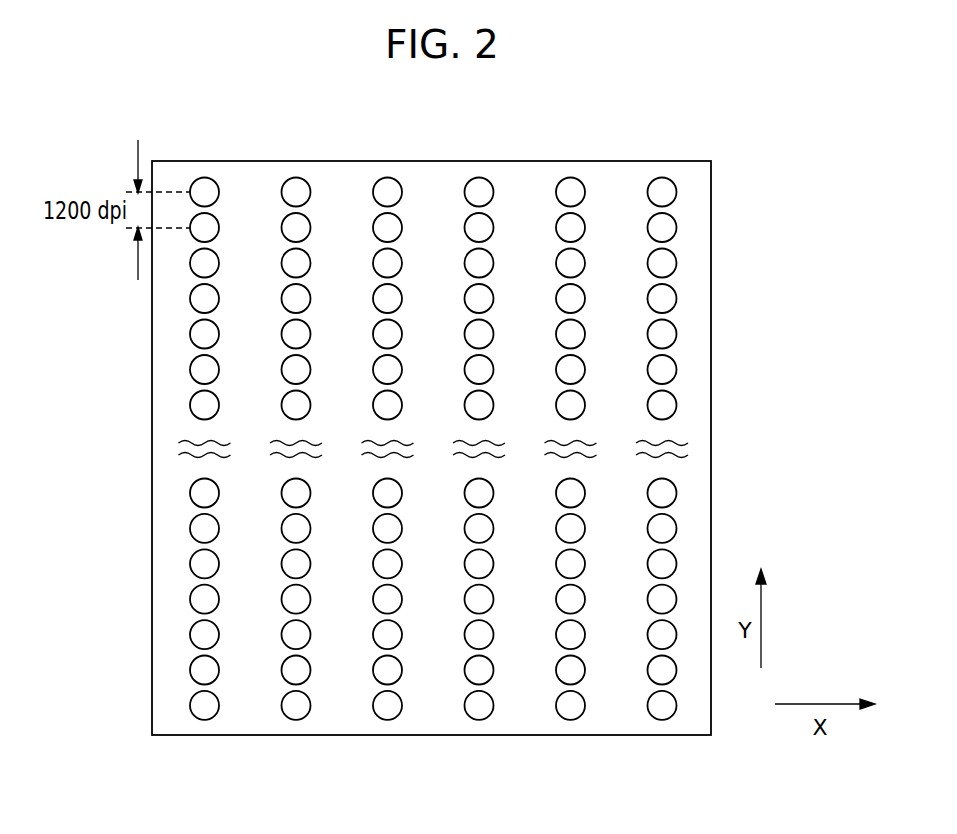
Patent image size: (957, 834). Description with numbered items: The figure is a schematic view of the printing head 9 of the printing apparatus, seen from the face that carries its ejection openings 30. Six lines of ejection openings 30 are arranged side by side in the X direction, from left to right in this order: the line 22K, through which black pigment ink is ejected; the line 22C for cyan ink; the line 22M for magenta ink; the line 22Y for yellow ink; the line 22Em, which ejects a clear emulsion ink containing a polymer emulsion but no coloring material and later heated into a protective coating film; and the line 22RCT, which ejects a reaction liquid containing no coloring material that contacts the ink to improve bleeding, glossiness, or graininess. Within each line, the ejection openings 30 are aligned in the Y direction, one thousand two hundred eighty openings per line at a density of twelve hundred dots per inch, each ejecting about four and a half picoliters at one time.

The printing head 9 is at (700, 377).
The ejection openings 30 is at (443, 454).
The line of ejection openings for black ink 22K is at (178, 740).
The line of ejection openings for cyan ink 22C is at (270, 740).
The line of ejection openings for magenta ink 22M is at (414, 740).
The line of ejection openings for yellow ink 22Y is at (453, 740).
The line of ejection openings for clear emulsion ink 22Em is at (544, 740).
The line of ejection openings for reaction liquid 22RCT is at (636, 740).